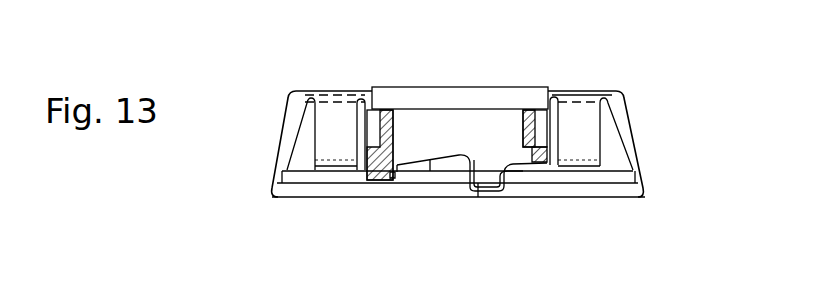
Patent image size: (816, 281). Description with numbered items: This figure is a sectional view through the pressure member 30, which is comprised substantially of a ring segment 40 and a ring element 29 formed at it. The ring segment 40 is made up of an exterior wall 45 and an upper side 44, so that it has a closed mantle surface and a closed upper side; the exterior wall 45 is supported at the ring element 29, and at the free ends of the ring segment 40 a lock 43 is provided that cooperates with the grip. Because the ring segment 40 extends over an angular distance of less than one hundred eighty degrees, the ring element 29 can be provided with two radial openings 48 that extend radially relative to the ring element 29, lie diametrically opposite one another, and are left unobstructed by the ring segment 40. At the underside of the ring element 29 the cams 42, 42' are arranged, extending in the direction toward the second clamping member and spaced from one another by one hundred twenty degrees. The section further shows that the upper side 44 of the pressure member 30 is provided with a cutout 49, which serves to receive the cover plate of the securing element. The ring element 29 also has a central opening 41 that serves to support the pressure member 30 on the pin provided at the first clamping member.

The pressure member 30 is at (293, 76).
The ring segment 40 is at (283, 146).
The central opening 41 is at (393, 135).
The cam 42 is at (389, 205).
The cam 42' is at (472, 203).
The lock 43 is at (327, 147).
The upper side 44 is at (586, 90).
The exterior wall 45 is at (633, 147).
The radial opening 48 is at (367, 130).
The cutout 49 is at (371, 107).
The ring element 29 is at (534, 168).